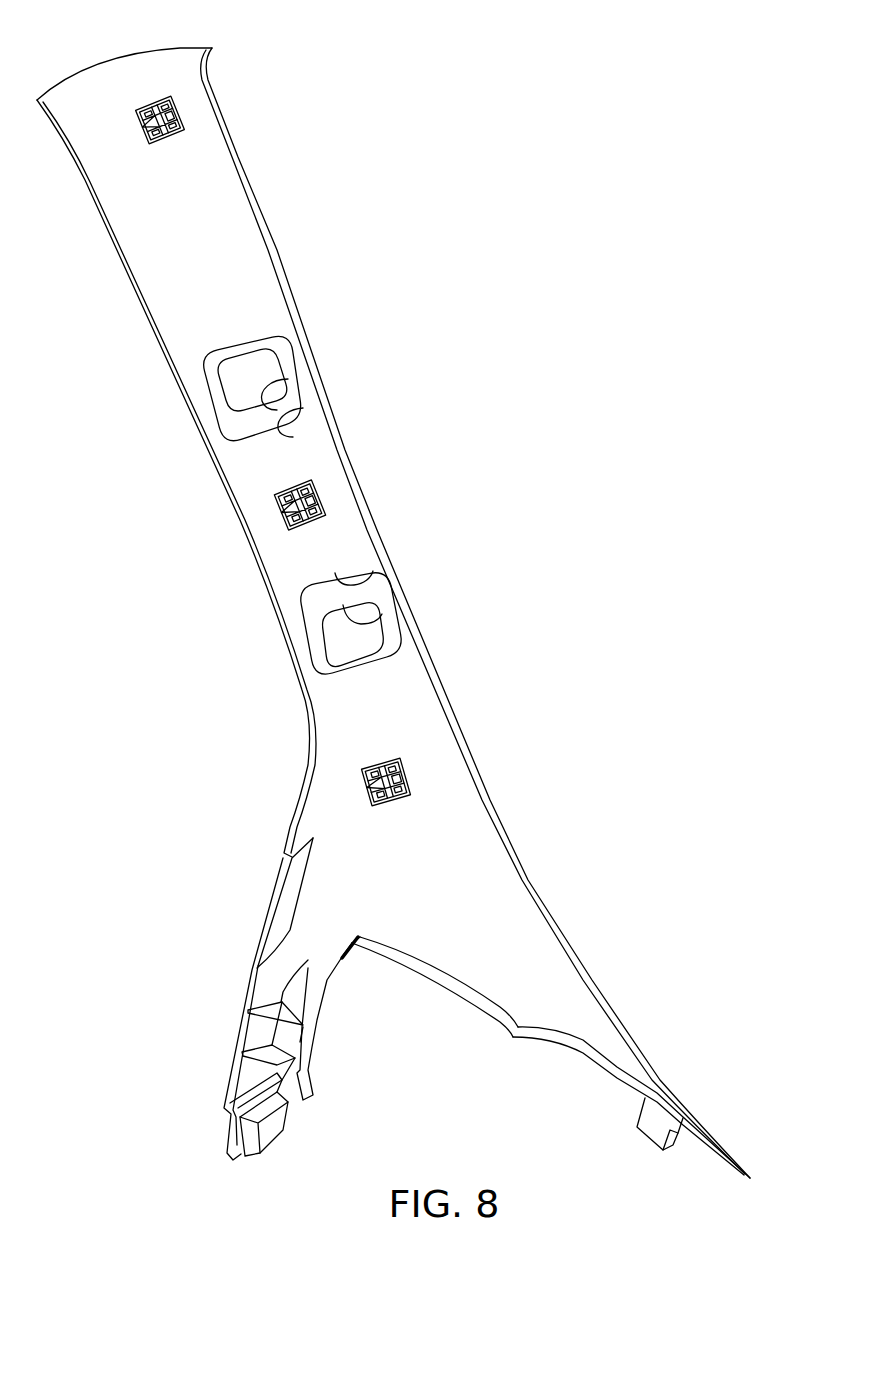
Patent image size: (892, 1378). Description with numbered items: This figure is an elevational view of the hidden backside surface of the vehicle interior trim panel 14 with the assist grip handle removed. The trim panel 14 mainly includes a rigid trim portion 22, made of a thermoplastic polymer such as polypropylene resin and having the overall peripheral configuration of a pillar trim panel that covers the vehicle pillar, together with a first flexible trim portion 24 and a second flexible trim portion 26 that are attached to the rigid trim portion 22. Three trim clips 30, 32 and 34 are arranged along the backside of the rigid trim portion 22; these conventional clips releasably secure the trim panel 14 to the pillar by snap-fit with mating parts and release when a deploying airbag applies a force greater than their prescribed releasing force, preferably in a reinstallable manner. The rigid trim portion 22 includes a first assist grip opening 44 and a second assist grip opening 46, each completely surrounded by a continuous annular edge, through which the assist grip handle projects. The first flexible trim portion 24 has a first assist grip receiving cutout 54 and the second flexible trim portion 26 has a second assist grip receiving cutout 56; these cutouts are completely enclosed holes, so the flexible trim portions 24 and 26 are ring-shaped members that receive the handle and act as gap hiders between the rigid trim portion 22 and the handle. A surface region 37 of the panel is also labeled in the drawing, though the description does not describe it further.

The vehicle interior trim panel 14 is at (260, 208).
The rigid trim portion 22 is at (245, 540).
The first flexible trim portion 24 is at (211, 401).
The second flexible trim portion 26 is at (313, 647).
The trim clip 30 is at (181, 110).
The trim clip 32 is at (320, 497).
The trim clip 34 is at (408, 778).
The panel surface 37 is at (310, 455).
The first assist grip opening 44 is at (300, 408).
The second assist grip opening 46 is at (373, 574).
The first assist grip receiving cutout 54 is at (276, 377).
The second assist grip receiving cutout 56 is at (382, 614).